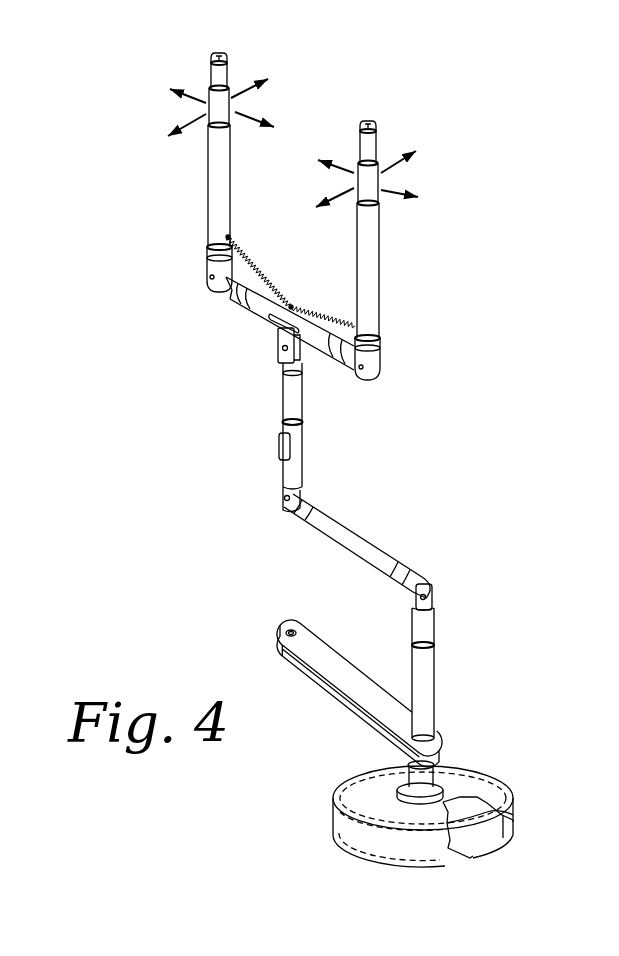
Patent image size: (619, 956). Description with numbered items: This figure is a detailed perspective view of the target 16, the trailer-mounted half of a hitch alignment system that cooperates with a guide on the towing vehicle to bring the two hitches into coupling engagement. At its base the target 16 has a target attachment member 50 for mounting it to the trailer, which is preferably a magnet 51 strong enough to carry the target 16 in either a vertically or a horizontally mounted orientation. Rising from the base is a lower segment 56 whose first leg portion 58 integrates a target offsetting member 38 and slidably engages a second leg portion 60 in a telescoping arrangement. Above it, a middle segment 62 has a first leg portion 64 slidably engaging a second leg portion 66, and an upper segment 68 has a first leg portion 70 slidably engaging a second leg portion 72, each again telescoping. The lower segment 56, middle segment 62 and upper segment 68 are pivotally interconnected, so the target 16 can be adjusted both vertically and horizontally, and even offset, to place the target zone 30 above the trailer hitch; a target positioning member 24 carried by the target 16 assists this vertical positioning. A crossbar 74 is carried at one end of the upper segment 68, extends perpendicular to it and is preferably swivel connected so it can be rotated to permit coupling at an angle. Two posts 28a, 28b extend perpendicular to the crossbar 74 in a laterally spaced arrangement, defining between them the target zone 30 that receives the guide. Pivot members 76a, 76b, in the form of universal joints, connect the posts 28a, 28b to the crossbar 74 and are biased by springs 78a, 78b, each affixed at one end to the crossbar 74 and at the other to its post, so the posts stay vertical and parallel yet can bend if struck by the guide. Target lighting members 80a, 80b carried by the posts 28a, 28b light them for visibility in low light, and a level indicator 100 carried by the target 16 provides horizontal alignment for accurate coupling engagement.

The target 16 is at (281, 508).
The target positioning member 24 is at (276, 452).
The post 28a is at (169, 148).
The post 28b is at (418, 229).
The target zone 30 is at (247, 322).
The target offsetting member 38 is at (328, 658).
The target attachment member 50 is at (463, 803).
The magnet 51 is at (486, 843).
The lower segment 56 is at (482, 697).
The first leg portion 58 is at (428, 708).
The second leg portion 60 is at (425, 634).
The middle segment 62 is at (321, 538).
The first leg portion 64 is at (398, 560).
The second leg portion 66 is at (318, 508).
The upper segment 68 is at (306, 421).
The first leg portion 70 is at (282, 480).
The second leg portion 72 is at (288, 401).
The crossbar 74 is at (317, 340).
The pivot member 76a is at (207, 278).
The pivot member 76b is at (372, 363).
The spring 78a is at (248, 258).
The spring 78b is at (327, 317).
The target lighting member 80a is at (210, 56).
The target lighting member 80b is at (375, 125).
The level indicator 100 is at (275, 325).